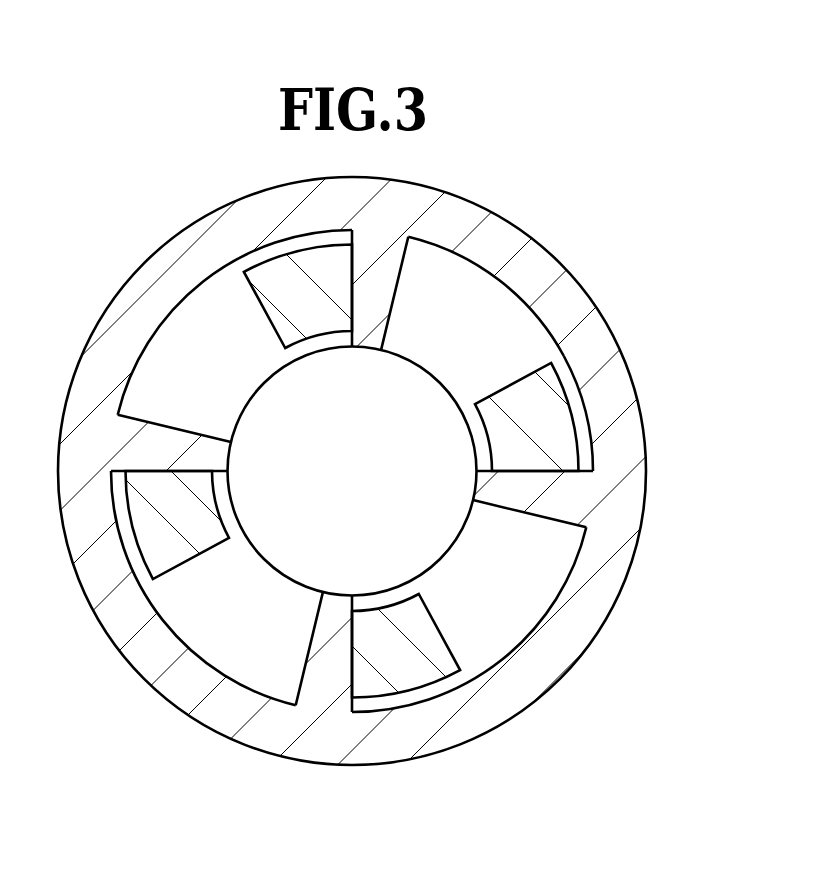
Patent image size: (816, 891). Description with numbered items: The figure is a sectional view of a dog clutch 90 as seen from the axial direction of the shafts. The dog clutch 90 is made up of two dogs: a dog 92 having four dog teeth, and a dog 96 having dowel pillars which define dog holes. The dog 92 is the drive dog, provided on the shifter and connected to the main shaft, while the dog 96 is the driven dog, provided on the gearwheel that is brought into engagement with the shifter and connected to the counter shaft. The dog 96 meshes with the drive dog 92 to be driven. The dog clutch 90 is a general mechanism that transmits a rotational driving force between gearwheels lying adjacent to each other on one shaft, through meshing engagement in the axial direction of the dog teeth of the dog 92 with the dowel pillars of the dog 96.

The dog clutch 90 is at (547, 231).
The dog 92 is at (574, 411).
The dog 96 is at (629, 504).